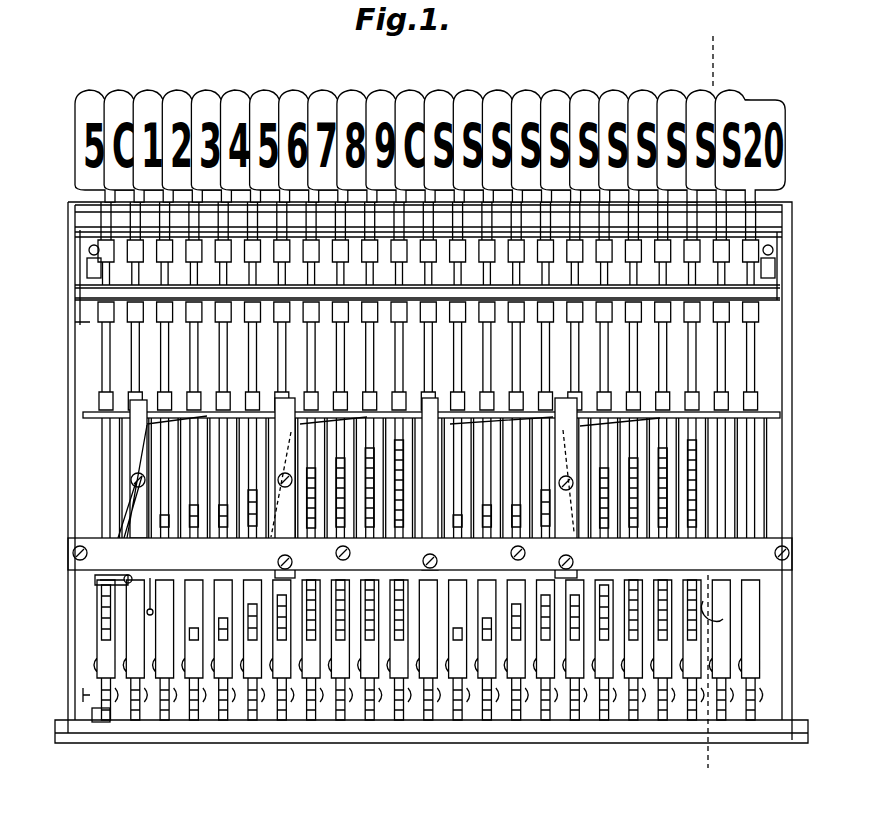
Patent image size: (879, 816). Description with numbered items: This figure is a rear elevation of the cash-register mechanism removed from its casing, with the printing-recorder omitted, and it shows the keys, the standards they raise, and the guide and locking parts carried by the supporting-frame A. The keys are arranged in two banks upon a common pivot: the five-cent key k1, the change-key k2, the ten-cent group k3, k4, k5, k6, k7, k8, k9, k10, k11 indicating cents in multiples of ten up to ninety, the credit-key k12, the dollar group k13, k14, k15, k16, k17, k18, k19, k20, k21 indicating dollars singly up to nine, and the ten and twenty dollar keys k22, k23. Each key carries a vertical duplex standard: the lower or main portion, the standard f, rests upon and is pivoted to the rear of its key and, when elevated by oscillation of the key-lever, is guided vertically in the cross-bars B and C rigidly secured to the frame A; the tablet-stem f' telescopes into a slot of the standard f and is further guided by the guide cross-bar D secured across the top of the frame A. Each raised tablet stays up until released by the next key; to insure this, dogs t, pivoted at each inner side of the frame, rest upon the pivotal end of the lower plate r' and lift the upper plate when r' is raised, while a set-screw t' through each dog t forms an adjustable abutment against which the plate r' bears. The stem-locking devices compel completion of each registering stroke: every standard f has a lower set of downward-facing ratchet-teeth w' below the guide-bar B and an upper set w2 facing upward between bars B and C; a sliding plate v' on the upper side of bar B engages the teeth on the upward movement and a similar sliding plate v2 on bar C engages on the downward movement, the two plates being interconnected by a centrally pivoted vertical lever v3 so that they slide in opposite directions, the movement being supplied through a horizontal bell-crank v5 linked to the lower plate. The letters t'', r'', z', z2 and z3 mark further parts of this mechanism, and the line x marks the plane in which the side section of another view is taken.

The guide cross-bar D is at (80, 207).
The set-screw t' is at (73, 277).
The dog t is at (424, 272).
The clamp screw t'' is at (786, 265).
The supporting-frame A is at (70, 331).
The cross-bar C is at (84, 412).
The lower plate r' is at (427, 278).
The guide rail r'' is at (427, 318).
The standard f is at (443, 433).
The tablet-stem f' is at (416, 306).
The sliding plate v' is at (146, 507).
The sliding plate v2 is at (294, 448).
The vertical lever v3 is at (566, 488).
The horizontal bell-crank v5 is at (703, 601).
The upper set of ratchet-teeth w2 is at (228, 505).
The lower set of ratchet-teeth w' is at (442, 610).
The cross-bar B is at (430, 554).
The roller bracket z' is at (84, 586).
The slotted bar z2 is at (100, 633).
The stop block z3 is at (92, 716).
The section plane x is at (709, 400).
The five-cent key k1 is at (109, 720).
The change-key k2 is at (138, 720).
The ten-cent key k3 is at (168, 720).
The ten-cent key k4 is at (197, 720).
The ten-cent key k5 is at (226, 720).
The ten-cent key k6 is at (255, 720).
The ten-cent key k7 is at (285, 720).
The ten-cent key k8 is at (314, 720).
The ten-cent key k9 is at (343, 720).
The ten-cent key k10 is at (373, 720).
The ten-cent key k11 is at (402, 720).
The credit-key k12 is at (431, 720).
The dollar key k13 is at (461, 720).
The dollar key k14 is at (490, 720).
The dollar key k15 is at (519, 720).
The dollar key k16 is at (548, 720).
The dollar key k17 is at (578, 720).
The dollar key k18 is at (607, 720).
The dollar key k19 is at (636, 720).
The dollar key k20 is at (666, 720).
The dollar key k21 is at (695, 720).
The ten-dollar key k22 is at (724, 720).
The twenty-dollar key k23 is at (754, 720).